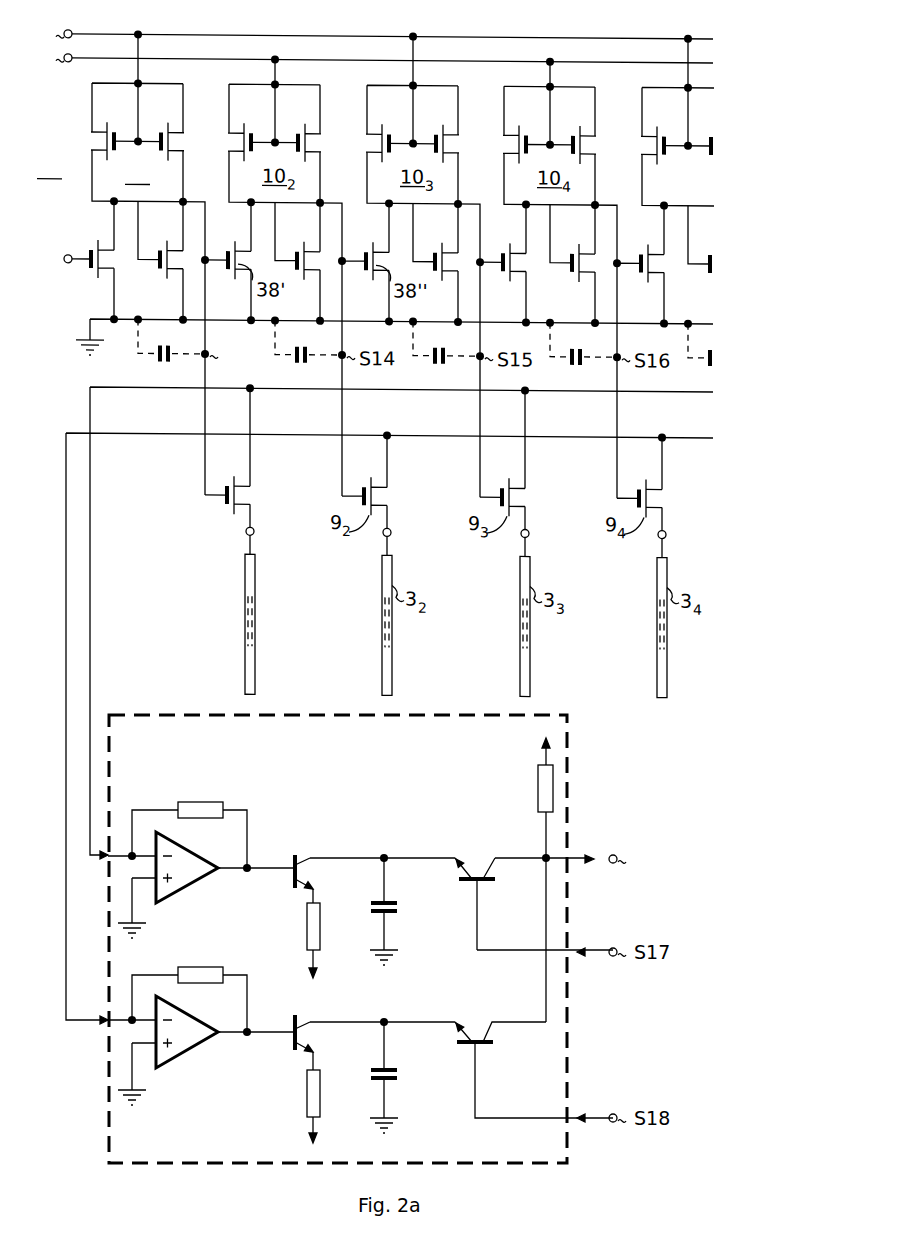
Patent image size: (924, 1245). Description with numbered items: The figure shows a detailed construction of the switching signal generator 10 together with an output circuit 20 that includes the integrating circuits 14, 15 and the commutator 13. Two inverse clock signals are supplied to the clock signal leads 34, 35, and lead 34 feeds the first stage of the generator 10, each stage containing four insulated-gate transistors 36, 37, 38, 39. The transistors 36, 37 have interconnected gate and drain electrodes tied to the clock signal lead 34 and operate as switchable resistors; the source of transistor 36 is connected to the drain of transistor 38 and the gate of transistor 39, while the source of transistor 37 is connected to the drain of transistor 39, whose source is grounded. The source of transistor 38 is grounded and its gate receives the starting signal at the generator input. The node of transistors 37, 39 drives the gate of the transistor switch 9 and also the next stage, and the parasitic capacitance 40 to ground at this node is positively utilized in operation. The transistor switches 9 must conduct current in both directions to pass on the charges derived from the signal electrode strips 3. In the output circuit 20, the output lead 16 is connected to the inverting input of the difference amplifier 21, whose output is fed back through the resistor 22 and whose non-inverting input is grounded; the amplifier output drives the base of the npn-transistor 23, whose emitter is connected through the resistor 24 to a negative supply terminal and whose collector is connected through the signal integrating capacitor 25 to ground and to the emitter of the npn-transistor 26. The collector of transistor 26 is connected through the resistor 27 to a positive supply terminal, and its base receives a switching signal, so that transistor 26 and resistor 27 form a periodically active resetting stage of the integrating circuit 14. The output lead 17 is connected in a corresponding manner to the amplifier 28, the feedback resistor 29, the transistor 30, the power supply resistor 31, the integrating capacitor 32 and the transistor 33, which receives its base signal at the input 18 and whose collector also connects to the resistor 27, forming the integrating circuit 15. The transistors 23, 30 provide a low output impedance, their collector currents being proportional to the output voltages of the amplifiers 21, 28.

The clock signal lead 34 is at (160, 34).
The clock signal lead 35 is at (215, 58).
The switching signal generator 10 is at (140, 262).
The transistor 36 is at (104, 126).
The transistor 37 is at (154, 126).
The transistor 38 is at (101, 263).
The transistor 39 is at (170, 240).
The parasitic capacitance 40 is at (168, 358).
The output lead 16 is at (268, 389).
The output lead 17 is at (392, 433).
The transistor switch 9 is at (232, 513).
The signal electrode strip 3 is at (255, 583).
The output circuit 20 is at (570, 798).
The difference amplifier 21 is at (187, 886).
The resistor 22 is at (207, 801).
The npn-transistor 23 is at (294, 855).
The integrating circuit 14 is at (363, 893).
The resistor 24 is at (305, 929).
The signal integrating capacitor 25 is at (397, 907).
The npn-transistor 26 is at (490, 882).
The commutator 13 is at (527, 986).
The signal S18 input 18 is at (633, 859).
The resistor 27 is at (536, 794).
The amplifier 28 is at (187, 1050).
The feedback resistor 29 is at (206, 967).
The transistor 30 is at (294, 1023).
The integrating circuit 15 is at (363, 1059).
The power supply resistor 31 is at (305, 1096).
The integrating capacitor 32 is at (397, 1074).
The transistor 33 is at (485, 1045).